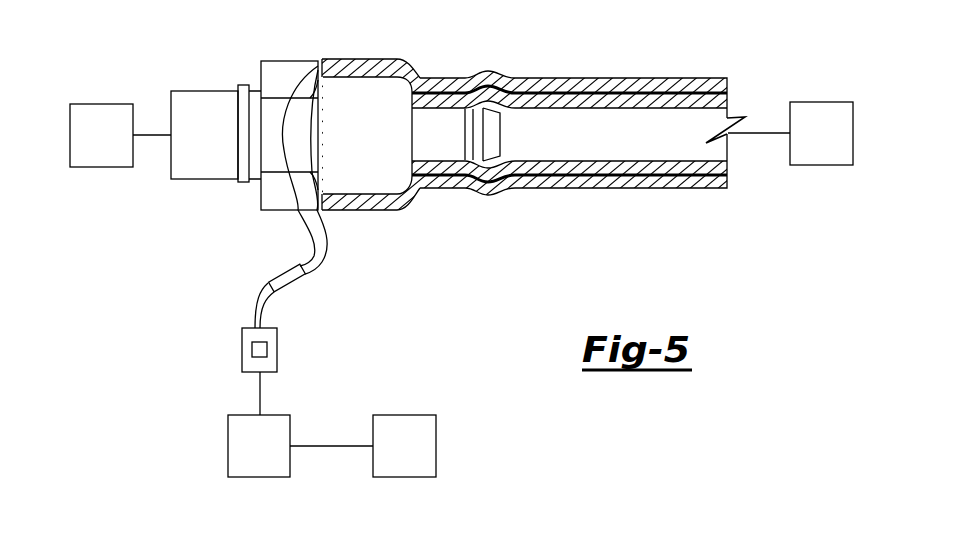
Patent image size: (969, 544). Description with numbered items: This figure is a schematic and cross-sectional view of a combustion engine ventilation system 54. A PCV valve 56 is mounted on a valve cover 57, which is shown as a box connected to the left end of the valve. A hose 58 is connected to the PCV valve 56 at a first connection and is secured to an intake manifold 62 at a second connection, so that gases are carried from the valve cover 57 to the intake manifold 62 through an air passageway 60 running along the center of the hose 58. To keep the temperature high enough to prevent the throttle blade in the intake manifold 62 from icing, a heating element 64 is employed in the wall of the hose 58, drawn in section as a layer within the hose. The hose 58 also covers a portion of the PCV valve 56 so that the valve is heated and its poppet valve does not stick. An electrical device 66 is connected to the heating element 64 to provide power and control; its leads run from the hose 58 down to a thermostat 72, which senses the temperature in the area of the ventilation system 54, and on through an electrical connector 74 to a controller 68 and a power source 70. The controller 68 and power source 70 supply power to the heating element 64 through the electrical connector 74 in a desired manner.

The combustion engine ventilation system 54 is at (521, 52).
The PCV valve 56 is at (277, 60).
The valve cover 57 is at (110, 146).
The hose 58 is at (662, 75).
The air passageway 60 is at (651, 144).
The intake manifold 62 is at (831, 146).
The heating element 64 is at (611, 177).
The electrical device 66 is at (324, 297).
The controller 68 is at (269, 458).
The power source 70 is at (414, 458).
The thermostat 72 is at (284, 272).
The electrical connector 74 is at (242, 350).